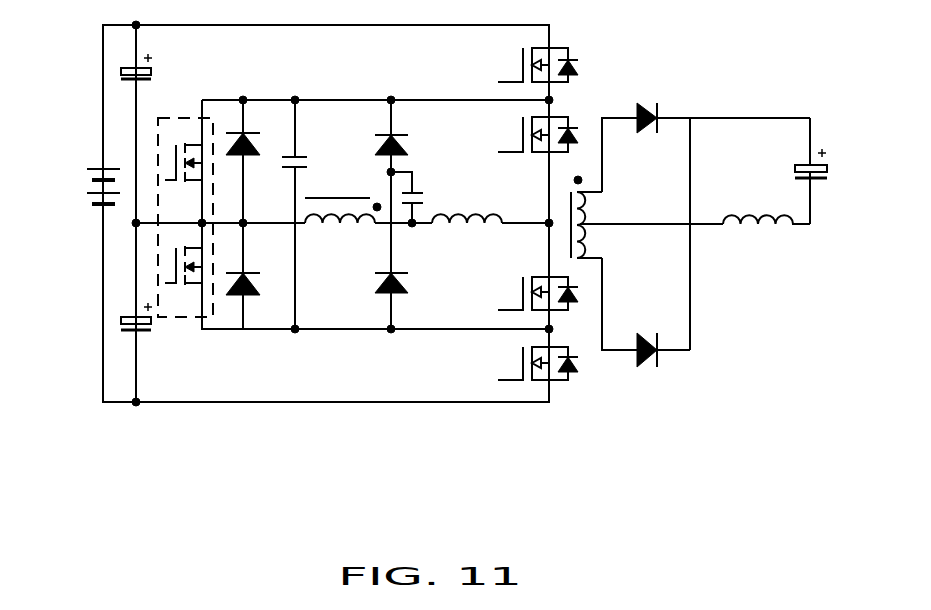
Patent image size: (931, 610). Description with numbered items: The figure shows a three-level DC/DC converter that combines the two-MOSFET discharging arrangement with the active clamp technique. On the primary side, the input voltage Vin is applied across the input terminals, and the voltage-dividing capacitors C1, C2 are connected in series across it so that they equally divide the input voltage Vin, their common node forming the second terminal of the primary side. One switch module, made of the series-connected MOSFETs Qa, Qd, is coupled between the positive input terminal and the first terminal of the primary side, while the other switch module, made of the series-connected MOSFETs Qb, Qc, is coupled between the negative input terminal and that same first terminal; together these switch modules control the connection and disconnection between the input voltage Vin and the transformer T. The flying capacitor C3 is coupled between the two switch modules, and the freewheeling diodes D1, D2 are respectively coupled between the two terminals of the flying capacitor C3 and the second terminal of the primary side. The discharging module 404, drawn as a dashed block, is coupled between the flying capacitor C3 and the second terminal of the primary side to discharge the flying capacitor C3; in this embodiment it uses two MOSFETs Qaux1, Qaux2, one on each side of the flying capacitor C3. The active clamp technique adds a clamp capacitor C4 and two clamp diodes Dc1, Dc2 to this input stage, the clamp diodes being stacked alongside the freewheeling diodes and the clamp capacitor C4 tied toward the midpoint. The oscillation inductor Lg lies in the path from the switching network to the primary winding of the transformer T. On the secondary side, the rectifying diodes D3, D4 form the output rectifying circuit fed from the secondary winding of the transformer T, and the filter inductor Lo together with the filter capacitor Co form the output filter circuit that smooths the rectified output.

The discharging module 404 is at (157, 266).
The input voltage Vin is at (91, 170).
The voltage-dividing capacitor C1 is at (150, 54).
The voltage-dividing capacitor C2 is at (129, 335).
The flying capacitor C3 is at (282, 214).
The clamp capacitor C4 is at (419, 193).
The freewheeling diode D1 is at (251, 161).
The freewheeling diode D2 is at (251, 276).
The clamp diode Dc1 is at (374, 161).
The clamp diode Dc2 is at (374, 276).
The rectifying diode D3 is at (706, 226).
The rectifying diode D4 is at (646, 332).
The MOSFET Qaux1 is at (201, 122).
The MOSFET Qaux2 is at (201, 310).
The MOSFET Qa is at (532, 134).
The MOSFET Qb is at (532, 293).
The MOSFET Qc is at (532, 363).
The MOSFET Qd is at (532, 65).
The transformer T is at (514, 213).
The oscillation inductor Lg is at (467, 200).
The filter inductor Lo is at (766, 201).
The filter capacitor Co is at (802, 171).